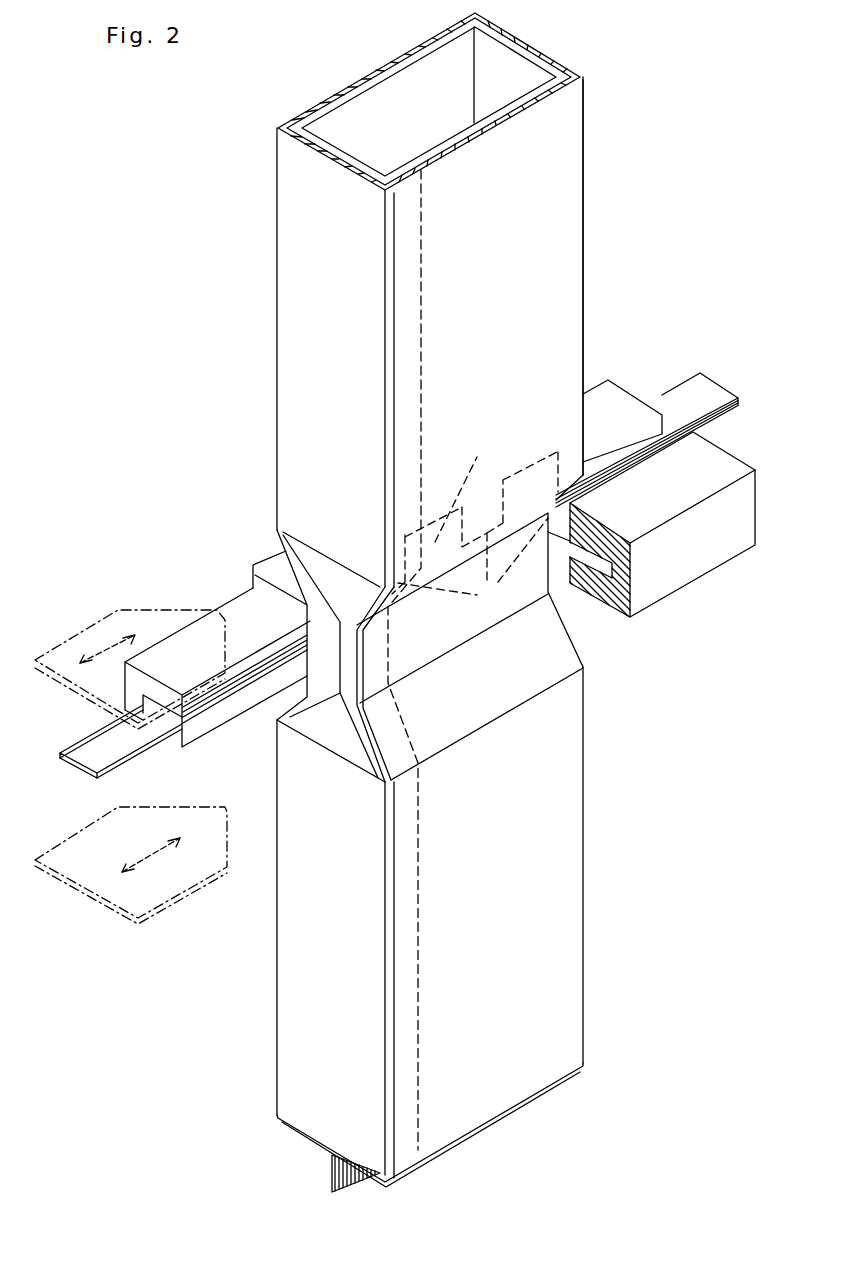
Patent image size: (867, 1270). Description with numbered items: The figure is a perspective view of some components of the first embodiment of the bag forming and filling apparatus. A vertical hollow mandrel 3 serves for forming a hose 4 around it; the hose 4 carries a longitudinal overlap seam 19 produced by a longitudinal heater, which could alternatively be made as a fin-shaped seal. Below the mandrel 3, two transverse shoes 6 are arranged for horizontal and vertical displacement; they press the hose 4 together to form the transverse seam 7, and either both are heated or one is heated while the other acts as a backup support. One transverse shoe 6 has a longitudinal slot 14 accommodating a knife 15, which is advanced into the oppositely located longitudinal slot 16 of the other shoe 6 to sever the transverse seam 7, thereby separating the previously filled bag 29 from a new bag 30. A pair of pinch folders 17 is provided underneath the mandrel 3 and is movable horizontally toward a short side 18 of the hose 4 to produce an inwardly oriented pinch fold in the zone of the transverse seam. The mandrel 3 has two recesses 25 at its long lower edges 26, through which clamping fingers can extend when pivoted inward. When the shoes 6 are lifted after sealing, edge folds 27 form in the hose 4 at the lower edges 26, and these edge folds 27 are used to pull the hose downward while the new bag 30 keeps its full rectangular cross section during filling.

The hollow mandrel 3 is at (368, 88).
The hose 4 is at (277, 272).
The transverse shoe 6 is at (622, 412).
The transverse seam 7 is at (330, 1175).
The longitudinal slot 14 is at (215, 713).
The knife 15 is at (113, 737).
The longitudinal slot 16 is at (590, 558).
The pinch folder 17 is at (65, 643).
The short side 18 is at (320, 343).
The overlap seam 19 is at (407, 433).
The recess 25 is at (528, 497).
The long lower edge 26 is at (449, 596).
The edge fold 27 is at (273, 1120).
The filled bag 29 is at (585, 880).
The new bag 30 is at (585, 273).